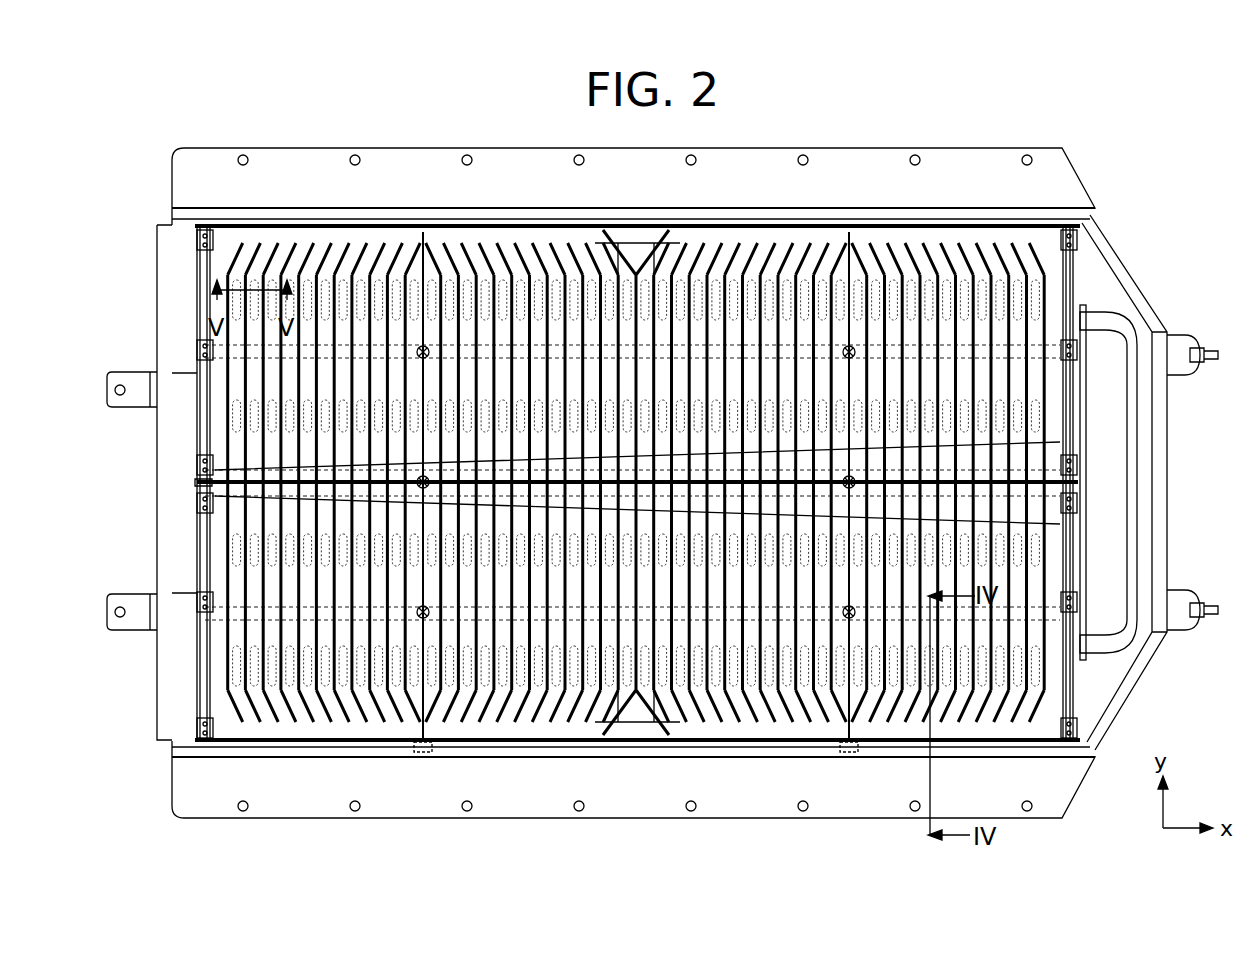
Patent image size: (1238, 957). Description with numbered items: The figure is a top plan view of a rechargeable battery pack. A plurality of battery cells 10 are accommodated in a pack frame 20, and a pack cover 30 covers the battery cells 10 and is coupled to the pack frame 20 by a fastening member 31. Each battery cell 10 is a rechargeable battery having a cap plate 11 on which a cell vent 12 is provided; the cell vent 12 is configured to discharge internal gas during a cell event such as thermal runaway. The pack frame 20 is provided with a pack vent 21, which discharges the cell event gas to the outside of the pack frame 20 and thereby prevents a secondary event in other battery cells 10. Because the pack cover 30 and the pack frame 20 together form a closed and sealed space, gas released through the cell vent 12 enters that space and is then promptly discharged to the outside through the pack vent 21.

The battery cell 10 is at (227, 237).
The cap plate 11 is at (395, 318).
The cell vent 12 is at (210, 277).
The pack frame 20 is at (160, 717).
The pack vent 21 is at (423, 752).
The pack cover 30 is at (194, 452).
The fastening member 31 is at (430, 352).